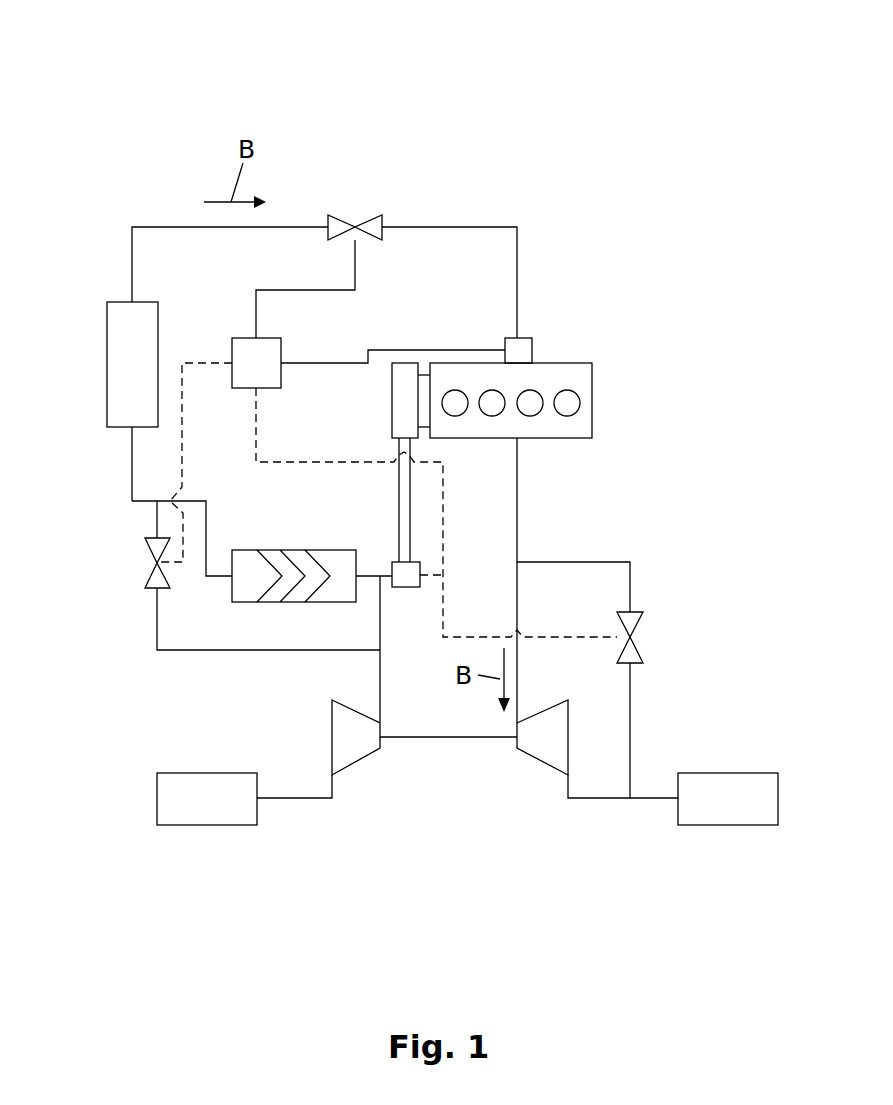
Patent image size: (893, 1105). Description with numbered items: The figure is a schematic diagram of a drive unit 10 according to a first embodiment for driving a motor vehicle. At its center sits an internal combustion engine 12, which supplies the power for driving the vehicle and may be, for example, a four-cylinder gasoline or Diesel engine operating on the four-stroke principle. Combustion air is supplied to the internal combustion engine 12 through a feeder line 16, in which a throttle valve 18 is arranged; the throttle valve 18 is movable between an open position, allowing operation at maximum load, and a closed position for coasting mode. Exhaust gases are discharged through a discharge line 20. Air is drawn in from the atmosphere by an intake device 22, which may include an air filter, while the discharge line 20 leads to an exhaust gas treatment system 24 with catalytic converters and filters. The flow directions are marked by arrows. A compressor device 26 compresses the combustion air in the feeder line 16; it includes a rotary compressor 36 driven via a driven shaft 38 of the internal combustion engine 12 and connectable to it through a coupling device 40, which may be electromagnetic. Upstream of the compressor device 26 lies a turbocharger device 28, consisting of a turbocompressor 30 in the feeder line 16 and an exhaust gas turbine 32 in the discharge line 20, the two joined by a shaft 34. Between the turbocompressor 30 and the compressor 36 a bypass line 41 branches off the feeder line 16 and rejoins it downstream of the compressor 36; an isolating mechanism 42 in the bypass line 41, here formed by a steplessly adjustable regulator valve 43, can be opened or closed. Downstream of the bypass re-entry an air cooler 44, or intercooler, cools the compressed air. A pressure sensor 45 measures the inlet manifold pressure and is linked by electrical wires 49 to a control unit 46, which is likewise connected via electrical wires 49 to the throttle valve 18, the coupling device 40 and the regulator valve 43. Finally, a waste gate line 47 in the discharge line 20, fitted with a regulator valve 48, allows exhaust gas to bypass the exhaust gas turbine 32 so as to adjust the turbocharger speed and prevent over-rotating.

The drive unit 10 is at (84, 84).
The internal combustion engine 12 is at (592, 388).
The feeder line 16 is at (132, 256).
The throttle valve 18 is at (356, 226).
The discharge line 20 is at (517, 483).
The intake device 22 is at (223, 811).
The exhaust gas treatment system 24 is at (744, 811).
The compressor device 26 is at (262, 544).
The turbocharger device 28 is at (416, 868).
The turbocompressor 30 is at (353, 765).
The exhaust gas turbine 32 is at (543, 763).
The shaft 34 is at (463, 740).
The compressor 36 is at (292, 548).
The driven shaft 38 is at (391, 388).
The coupling device 40 is at (402, 590).
The bypass line 41 is at (156, 645).
The isolating mechanism 42 is at (106, 544).
The regulator valve 43 is at (146, 562).
The air cooler 44 is at (148, 368).
The pressure sensor 45 is at (532, 356).
The control unit 46 is at (272, 376).
The waste gate line 47 is at (585, 562).
The regulator valve 48 is at (643, 637).
The electrical wires 49 is at (432, 348).